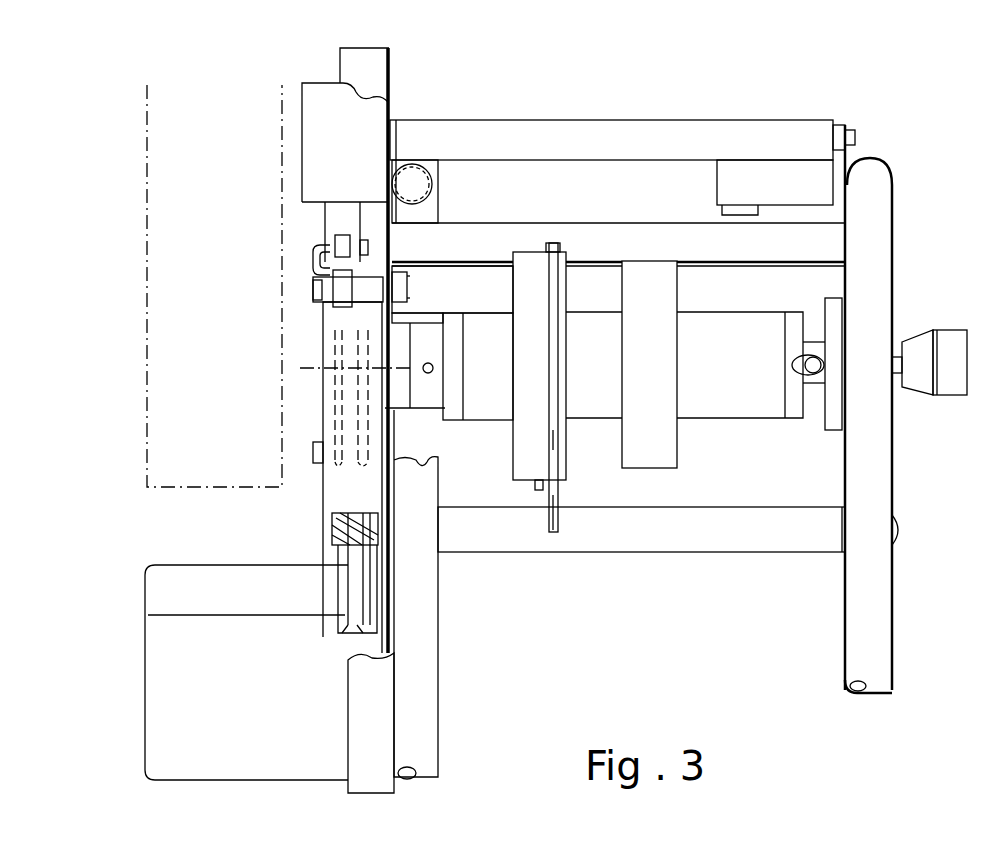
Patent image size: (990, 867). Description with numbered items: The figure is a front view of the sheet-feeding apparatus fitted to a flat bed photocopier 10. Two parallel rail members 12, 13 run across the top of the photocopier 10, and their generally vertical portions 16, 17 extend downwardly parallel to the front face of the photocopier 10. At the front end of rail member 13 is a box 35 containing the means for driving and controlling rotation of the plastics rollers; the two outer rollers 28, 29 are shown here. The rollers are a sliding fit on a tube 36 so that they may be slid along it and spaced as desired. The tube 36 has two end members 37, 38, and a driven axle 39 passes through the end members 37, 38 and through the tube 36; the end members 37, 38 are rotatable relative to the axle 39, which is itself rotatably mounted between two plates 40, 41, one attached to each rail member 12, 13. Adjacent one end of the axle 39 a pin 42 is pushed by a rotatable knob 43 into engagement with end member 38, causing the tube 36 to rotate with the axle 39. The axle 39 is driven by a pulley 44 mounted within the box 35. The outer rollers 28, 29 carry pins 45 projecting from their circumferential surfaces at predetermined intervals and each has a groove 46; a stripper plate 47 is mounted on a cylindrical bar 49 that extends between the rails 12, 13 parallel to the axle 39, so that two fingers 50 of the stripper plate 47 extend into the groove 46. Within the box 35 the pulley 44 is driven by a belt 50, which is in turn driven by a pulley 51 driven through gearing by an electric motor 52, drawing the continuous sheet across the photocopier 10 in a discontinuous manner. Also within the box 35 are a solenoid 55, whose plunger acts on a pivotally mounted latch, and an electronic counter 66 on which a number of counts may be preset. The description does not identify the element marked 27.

The flat bed photocopier 10 is at (699, 240).
The rail member 12 is at (410, 182).
The rail member 13 is at (866, 183).
The vertical portion 16 is at (425, 677).
The vertical portion 17 is at (872, 650).
The upper beam 27 is at (637, 113).
The outer roller 28 is at (540, 270).
The outer roller 29 is at (637, 293).
The box 35 is at (353, 63).
The tube 36 is at (488, 333).
The end member 37 is at (448, 317).
The end member 38 is at (793, 335).
The driven axle 39 is at (697, 340).
The plate 40 is at (387, 229).
The plate 41 is at (848, 276).
The pin 42 is at (810, 372).
The rotatable knob 43 is at (952, 396).
The pulley 44 is at (345, 388).
The pins 45 is at (543, 492).
The groove 46 is at (552, 435).
The stripper plate 47 is at (553, 502).
The cylindrical bar 49 is at (673, 535).
The belt 50 is at (357, 487).
The pulley 51 is at (357, 595).
The electric motor 52 is at (215, 592).
The solenoid 55 is at (333, 155).
The electronic counter 66 is at (237, 334).